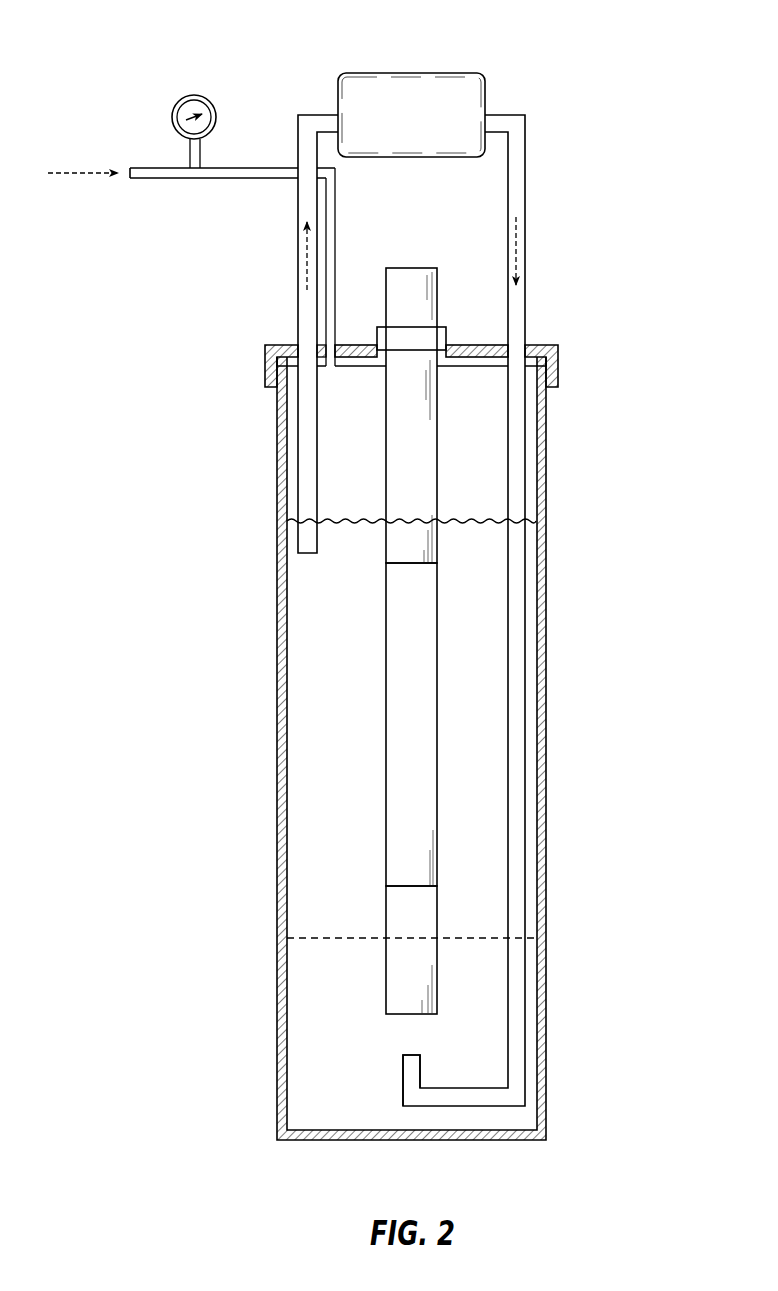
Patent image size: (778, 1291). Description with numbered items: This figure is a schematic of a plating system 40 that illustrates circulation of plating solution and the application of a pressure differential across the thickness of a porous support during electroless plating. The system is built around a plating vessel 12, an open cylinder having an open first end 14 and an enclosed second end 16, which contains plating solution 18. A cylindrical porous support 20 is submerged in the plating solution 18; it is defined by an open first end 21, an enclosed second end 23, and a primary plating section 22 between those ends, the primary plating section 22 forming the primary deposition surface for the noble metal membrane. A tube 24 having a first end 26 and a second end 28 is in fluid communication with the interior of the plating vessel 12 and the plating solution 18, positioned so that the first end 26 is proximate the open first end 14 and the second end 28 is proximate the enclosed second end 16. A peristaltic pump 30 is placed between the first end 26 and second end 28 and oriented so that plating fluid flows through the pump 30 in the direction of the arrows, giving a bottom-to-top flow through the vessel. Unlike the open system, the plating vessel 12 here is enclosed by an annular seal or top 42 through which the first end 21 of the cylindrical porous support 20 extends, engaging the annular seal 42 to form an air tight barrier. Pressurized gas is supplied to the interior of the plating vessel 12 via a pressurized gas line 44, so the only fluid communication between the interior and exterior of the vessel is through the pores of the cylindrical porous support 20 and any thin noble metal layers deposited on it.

The plating system 40 is at (178, 44).
The pressurized gas line 44 is at (228, 181).
The peristaltic pump 30 is at (425, 130).
The first end 26 is at (305, 537).
The tube 24 is at (525, 183).
The second end 28 is at (413, 1070).
The plating vessel 12 is at (407, 748).
The open first end 14 is at (550, 436).
The enclosed second end 16 is at (555, 1046).
The plating solution 18 is at (330, 637).
The annular seal 42 is at (558, 357).
The cylindrical porous support 20 is at (434, 638).
The open first end 21 is at (415, 295).
The primary plating section 22 is at (418, 725).
The enclosed second end 23 is at (417, 920).